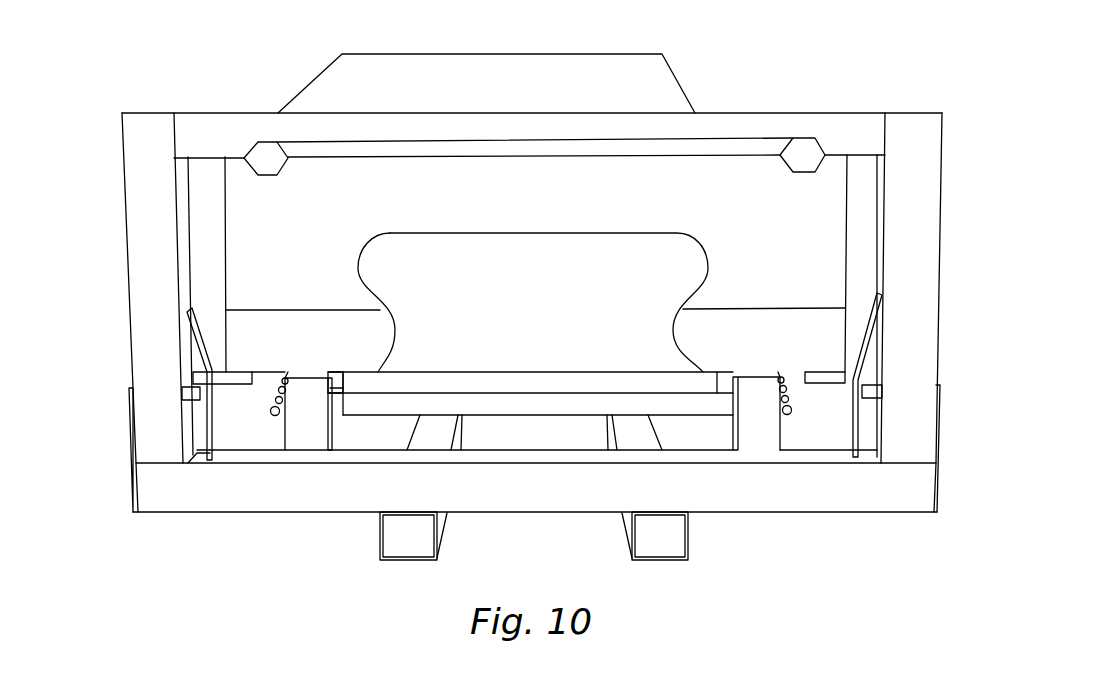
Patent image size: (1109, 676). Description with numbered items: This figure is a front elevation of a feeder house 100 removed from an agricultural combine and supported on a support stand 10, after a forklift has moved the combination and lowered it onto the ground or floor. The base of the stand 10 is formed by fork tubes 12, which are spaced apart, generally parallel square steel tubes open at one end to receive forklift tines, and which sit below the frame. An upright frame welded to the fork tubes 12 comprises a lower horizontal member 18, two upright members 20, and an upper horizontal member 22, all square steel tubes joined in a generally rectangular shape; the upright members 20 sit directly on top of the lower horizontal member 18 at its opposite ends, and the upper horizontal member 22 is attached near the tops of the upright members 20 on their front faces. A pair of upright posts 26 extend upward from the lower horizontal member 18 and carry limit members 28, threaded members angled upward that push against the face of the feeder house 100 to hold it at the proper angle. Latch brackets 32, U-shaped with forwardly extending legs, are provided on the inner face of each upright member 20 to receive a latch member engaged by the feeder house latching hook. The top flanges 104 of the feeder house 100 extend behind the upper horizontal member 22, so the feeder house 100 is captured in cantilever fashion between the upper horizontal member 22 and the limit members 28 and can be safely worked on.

The support stand 10 is at (137, 300).
The fork tubes 12 is at (378, 540).
The lower horizontal member 18 is at (525, 502).
The upright members 20 is at (132, 202).
The upper horizontal member 22 is at (228, 123).
The upright posts 26 is at (296, 438).
The limit members 28 is at (275, 407).
The latch brackets 32 is at (190, 390).
The feeder house 100 is at (778, 233).
The top flange 104 is at (748, 145).